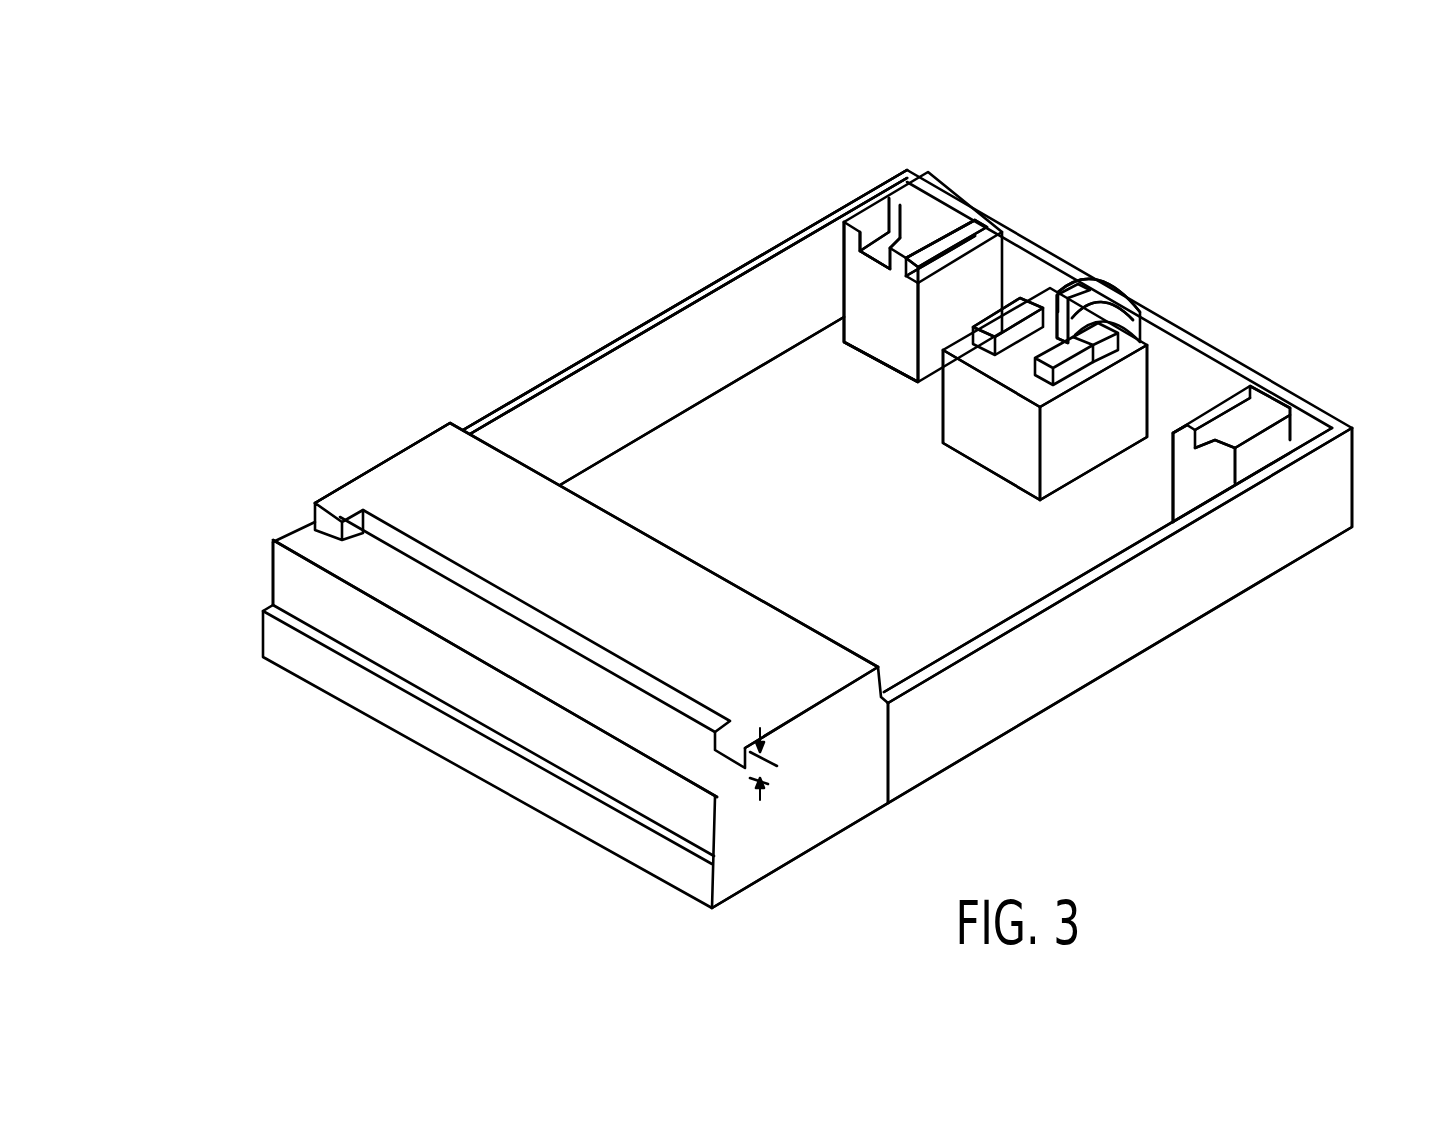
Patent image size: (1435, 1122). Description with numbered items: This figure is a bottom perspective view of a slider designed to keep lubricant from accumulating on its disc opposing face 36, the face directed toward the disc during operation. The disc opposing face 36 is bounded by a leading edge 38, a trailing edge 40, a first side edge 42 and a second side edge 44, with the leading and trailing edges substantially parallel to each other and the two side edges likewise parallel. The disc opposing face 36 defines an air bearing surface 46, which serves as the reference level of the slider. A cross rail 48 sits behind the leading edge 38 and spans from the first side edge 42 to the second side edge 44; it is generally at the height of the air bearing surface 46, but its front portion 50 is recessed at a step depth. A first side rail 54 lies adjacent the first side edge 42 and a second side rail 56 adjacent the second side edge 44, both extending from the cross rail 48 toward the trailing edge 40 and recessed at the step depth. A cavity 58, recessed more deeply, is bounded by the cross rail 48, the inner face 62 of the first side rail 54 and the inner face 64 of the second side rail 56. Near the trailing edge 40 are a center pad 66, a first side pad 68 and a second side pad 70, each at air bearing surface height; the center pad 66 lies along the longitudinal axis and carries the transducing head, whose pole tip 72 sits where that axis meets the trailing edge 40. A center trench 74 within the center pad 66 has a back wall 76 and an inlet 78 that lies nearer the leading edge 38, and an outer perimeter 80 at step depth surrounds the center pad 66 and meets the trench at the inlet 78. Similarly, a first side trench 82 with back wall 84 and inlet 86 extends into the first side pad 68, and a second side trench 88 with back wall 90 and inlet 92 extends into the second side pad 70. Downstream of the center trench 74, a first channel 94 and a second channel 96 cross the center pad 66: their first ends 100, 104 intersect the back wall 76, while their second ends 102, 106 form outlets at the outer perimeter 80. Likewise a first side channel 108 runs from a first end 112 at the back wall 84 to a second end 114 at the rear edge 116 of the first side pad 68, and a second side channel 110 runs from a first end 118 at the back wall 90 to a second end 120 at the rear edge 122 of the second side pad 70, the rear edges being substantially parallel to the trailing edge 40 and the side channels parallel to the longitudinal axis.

The disc opposing face 36 is at (433, 468).
The leading edge 38 is at (472, 680).
The trailing edge 40 is at (1172, 428).
The first side edge 42 is at (541, 386).
The second side edge 44 is at (985, 655).
The air bearing surface 46 is at (785, 688).
The cross rail 48 is at (437, 412).
The front portion 50 is at (379, 584).
The first side rail 54 is at (620, 342).
The second side rail 56 is at (1093, 585).
The cavity 58 is at (753, 410).
The inner face 62 is at (737, 330).
The inner face 64 is at (1018, 648).
The center pad 66 is at (1092, 265).
The first side pad 68 is at (958, 205).
The second side pad 70 is at (1290, 410).
The pole tip 72 is at (1122, 292).
The center trench 74 is at (1090, 395).
The back wall 76 is at (1086, 300).
The inlet 78 is at (1008, 363).
The outer perimeter 80 is at (1087, 370).
The first side trench 82 is at (870, 254).
The back wall 84 is at (893, 218).
The inlet 86 is at (880, 262).
The second side trench 88 is at (1295, 452).
The back wall 90 is at (1245, 398).
The inlet 92 is at (1210, 448).
The first channel 94 is at (1047, 318).
The second channel 96 is at (1117, 296).
The first end 100 is at (1043, 322).
The second end 102 is at (1057, 300).
The first end 104 is at (1090, 364).
The second end 106 is at (1105, 335).
The first side channel 108 is at (912, 205).
The second side channel 110 is at (1273, 413).
The first end 112 is at (905, 230).
The second end 114 is at (947, 222).
The rear edge 116 is at (958, 222).
The first end 118 is at (1230, 425).
The second end 120 is at (1285, 388).
The rear edge 122 is at (1307, 396).